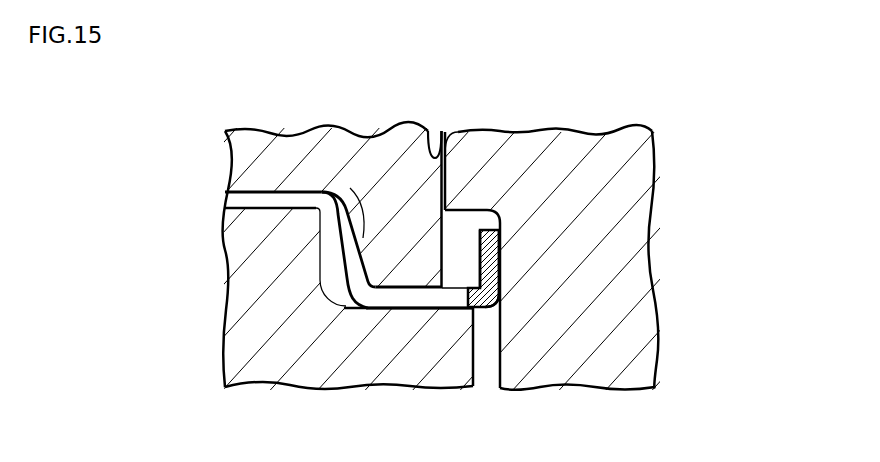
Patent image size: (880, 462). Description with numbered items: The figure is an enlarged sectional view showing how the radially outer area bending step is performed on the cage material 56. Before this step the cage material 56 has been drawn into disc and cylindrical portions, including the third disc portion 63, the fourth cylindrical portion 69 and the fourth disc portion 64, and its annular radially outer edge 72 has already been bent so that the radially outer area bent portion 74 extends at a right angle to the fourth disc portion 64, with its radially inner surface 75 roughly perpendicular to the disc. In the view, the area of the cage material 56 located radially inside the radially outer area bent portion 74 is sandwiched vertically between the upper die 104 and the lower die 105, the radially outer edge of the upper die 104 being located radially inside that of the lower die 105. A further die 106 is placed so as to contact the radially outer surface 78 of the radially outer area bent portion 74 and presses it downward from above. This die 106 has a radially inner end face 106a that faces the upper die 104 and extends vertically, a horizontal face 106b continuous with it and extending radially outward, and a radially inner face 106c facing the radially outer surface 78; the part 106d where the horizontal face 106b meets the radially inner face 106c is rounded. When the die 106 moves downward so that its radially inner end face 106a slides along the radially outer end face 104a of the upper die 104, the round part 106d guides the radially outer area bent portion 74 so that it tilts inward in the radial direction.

The cage material 56 is at (404, 282).
The third disc portion 63 is at (263, 200).
The fourth disc portion 64 is at (400, 296).
The fourth cylindrical portion 69 is at (343, 247).
The radially outer edge 72 is at (483, 229).
The radially outer area bent portion 74 is at (506, 254).
The radially inner surface 75 is at (480, 258).
The radially outer surface 78 is at (503, 265).
The upper die 104 is at (305, 148).
The radially outer end face 104a is at (428, 131).
The lower die 105 is at (346, 363).
The die 106 is at (587, 363).
The radially inner end face 106a is at (456, 140).
The horizontal face 106b is at (467, 210).
The radially inner face 106c is at (499, 357).
The round part 106d is at (500, 243).